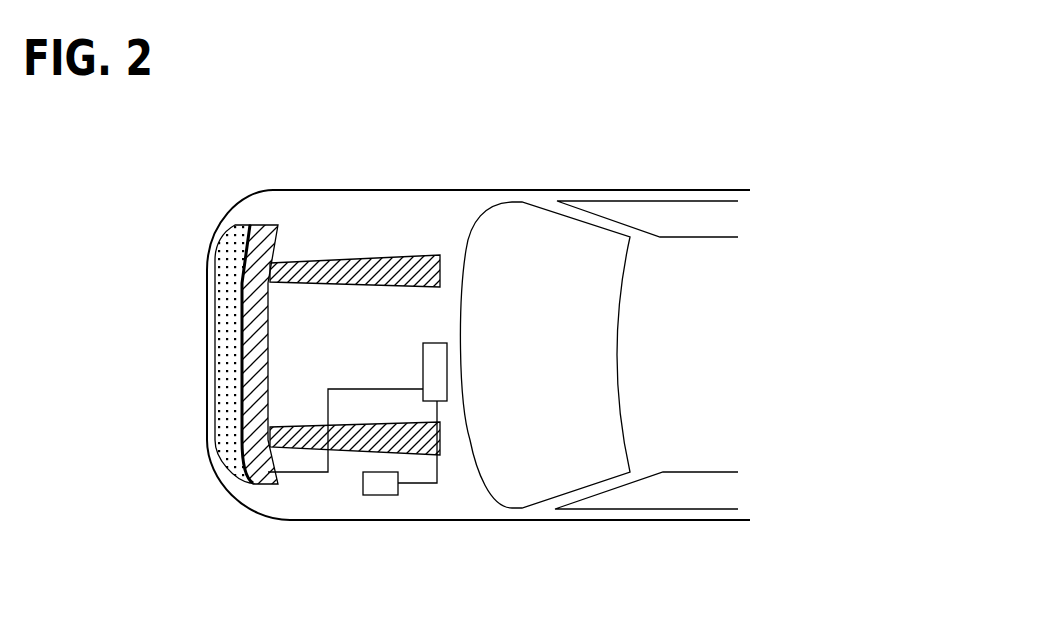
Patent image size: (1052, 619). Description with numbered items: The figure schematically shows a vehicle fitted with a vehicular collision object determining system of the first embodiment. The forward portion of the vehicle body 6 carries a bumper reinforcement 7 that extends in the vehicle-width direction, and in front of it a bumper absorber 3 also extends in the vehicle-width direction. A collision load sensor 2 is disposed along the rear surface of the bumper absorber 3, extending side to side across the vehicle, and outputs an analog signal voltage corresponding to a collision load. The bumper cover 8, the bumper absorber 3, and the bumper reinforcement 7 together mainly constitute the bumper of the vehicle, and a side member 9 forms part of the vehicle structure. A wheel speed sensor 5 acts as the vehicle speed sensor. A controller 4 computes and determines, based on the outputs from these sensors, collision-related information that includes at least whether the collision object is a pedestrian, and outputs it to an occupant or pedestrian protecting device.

The collision load sensor 2 is at (240, 277).
The bumper absorber 3 is at (230, 348).
The controller 4 is at (423, 362).
The wheel speed sensor 5 is at (383, 496).
The vehicle body 6 is at (497, 190).
The bumper reinforcement 7 is at (253, 414).
The bumper cover 8 is at (237, 498).
The side member 9 is at (362, 268).